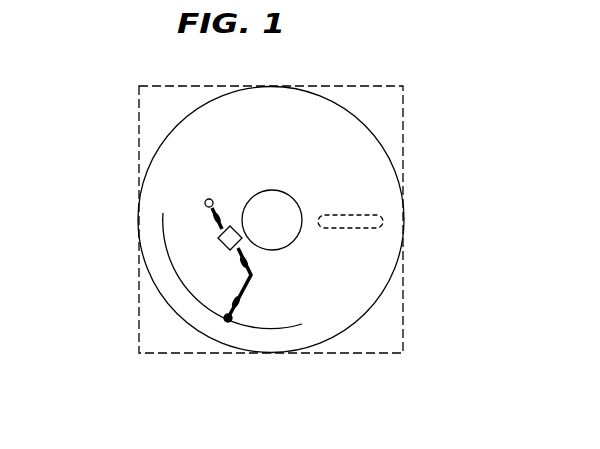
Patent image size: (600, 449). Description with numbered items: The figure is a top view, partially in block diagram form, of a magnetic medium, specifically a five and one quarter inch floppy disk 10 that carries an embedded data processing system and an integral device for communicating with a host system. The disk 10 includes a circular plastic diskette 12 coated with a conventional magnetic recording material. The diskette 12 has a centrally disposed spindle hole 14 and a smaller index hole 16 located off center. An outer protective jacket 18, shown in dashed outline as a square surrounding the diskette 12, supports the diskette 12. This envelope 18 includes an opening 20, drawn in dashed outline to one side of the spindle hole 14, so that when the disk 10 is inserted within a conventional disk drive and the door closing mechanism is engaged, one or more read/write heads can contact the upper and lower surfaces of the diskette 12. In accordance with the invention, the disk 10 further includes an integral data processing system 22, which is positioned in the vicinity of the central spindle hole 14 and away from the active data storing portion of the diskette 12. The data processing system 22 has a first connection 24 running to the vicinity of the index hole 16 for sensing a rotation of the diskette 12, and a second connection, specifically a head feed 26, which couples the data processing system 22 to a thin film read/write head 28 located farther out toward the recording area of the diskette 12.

The disk 10 is at (100, 120).
The diskette 12 is at (347, 110).
The spindle hole 14 is at (298, 204).
The index hole 16 is at (212, 199).
The outer protective jacket 18 is at (403, 160).
The opening 20 is at (348, 219).
The data processing system 22 is at (240, 232).
The first connection 24 is at (215, 211).
The head feed 26 is at (245, 290).
The thin film read/write head 28 is at (230, 321).